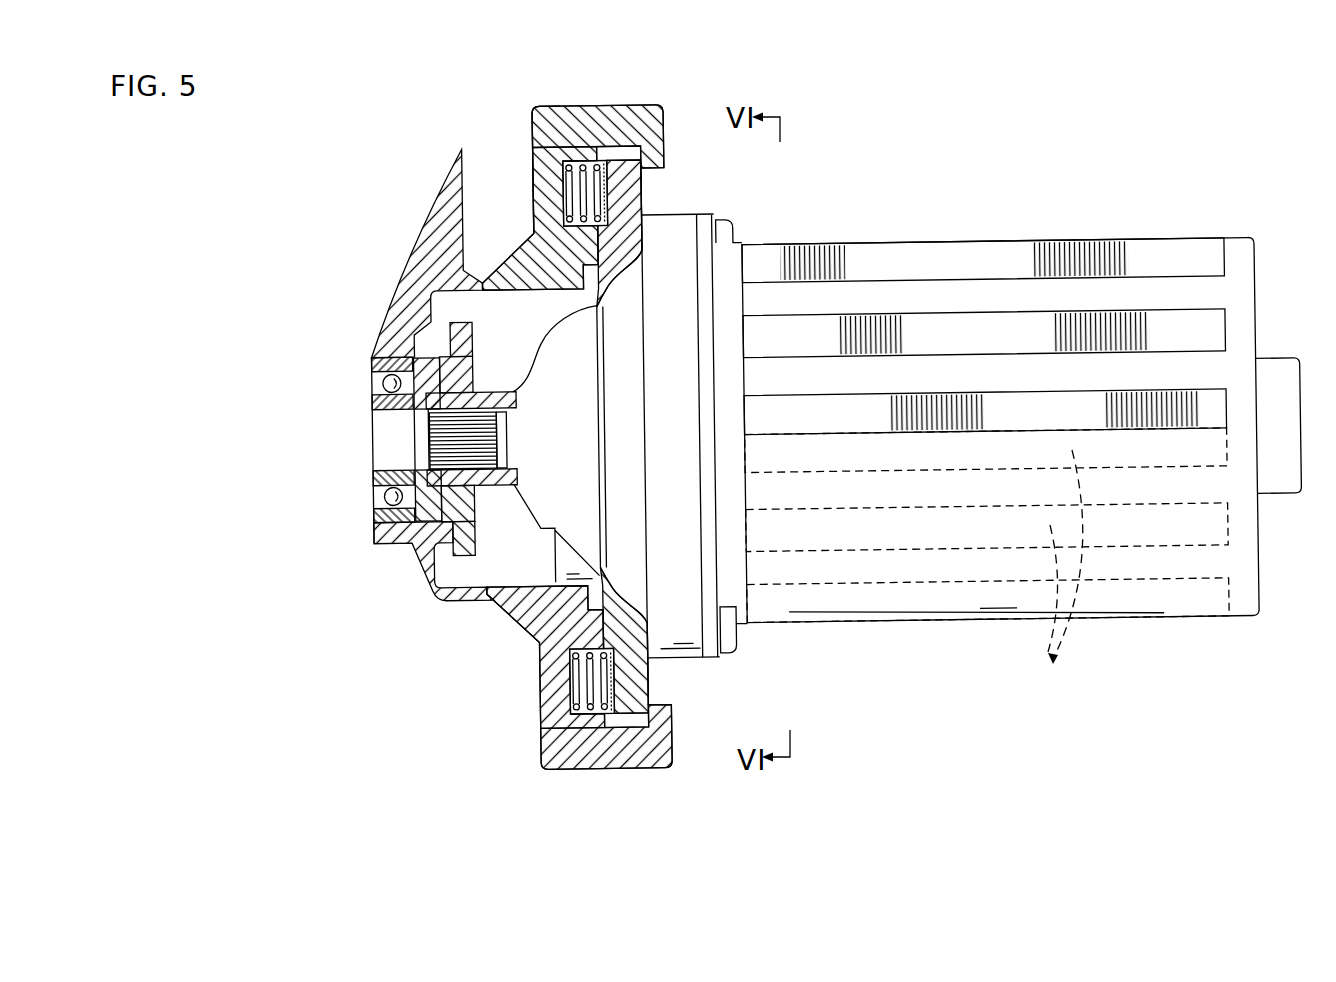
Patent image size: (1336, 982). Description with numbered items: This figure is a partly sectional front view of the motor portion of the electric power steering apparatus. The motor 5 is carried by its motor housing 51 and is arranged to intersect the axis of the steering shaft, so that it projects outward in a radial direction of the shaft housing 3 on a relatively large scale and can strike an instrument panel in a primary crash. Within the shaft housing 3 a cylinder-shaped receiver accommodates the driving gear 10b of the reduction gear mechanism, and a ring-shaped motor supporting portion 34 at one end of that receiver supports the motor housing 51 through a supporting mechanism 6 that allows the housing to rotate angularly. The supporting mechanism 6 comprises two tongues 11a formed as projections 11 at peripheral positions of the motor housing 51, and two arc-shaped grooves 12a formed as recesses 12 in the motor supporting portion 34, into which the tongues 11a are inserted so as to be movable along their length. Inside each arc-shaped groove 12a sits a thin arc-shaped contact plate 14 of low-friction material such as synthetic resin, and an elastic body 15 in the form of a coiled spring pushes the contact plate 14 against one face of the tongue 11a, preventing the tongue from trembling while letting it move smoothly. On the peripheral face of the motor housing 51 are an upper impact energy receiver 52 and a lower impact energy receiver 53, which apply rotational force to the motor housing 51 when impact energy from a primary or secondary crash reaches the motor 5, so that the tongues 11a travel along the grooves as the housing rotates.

The shaft housing 3 is at (424, 208).
The motor supporting portion 34 is at (535, 118).
The elastic body 15 is at (579, 152).
The supporting mechanism 6 is at (581, 150).
The arc-shaped groove 12a is at (628, 138).
The recess 12 is at (658, 446).
The tongue 11a is at (644, 176).
The projection 11 is at (717, 434).
The contact plate 14 is at (643, 200).
The motor 5 is at (1128, 238).
The motor housing 51 is at (880, 288).
The upper impact energy receiver 52 is at (1003, 397).
The lower impact energy receiver 53 is at (1059, 573).
The driving gear 10b is at (384, 430).